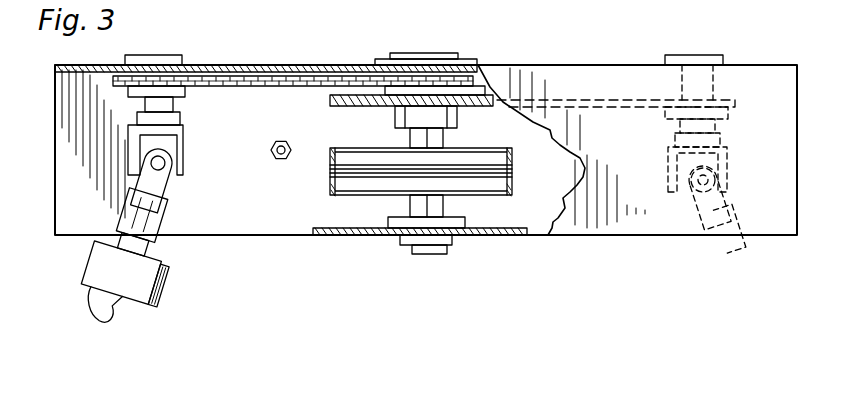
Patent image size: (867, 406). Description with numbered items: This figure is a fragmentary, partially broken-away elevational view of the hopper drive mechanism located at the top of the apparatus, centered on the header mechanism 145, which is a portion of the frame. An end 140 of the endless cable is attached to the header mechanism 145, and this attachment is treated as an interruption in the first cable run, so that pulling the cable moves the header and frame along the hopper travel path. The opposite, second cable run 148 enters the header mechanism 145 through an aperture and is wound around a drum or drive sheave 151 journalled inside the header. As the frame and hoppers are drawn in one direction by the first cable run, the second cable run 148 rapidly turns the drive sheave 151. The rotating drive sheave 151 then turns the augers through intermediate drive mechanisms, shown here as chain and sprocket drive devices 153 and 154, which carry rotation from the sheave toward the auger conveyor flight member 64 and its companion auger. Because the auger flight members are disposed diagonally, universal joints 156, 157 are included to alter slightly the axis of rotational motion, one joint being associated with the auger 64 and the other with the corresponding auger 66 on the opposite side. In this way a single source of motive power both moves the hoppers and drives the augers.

The chain and sprocket drive device 154 is at (313, 31).
The chain and sprocket drive device 153 is at (345, 97).
The header mechanism 145 is at (588, 78).
The cable end 140 is at (288, 127).
The drive sheave 151 is at (500, 131).
The second cable run 148 is at (514, 170).
The universal joint 157 is at (162, 178).
The universal joint 156 is at (728, 215).
The auger conveyor flight member 64 is at (150, 242).
The cutter assembly 66 is at (700, 247).